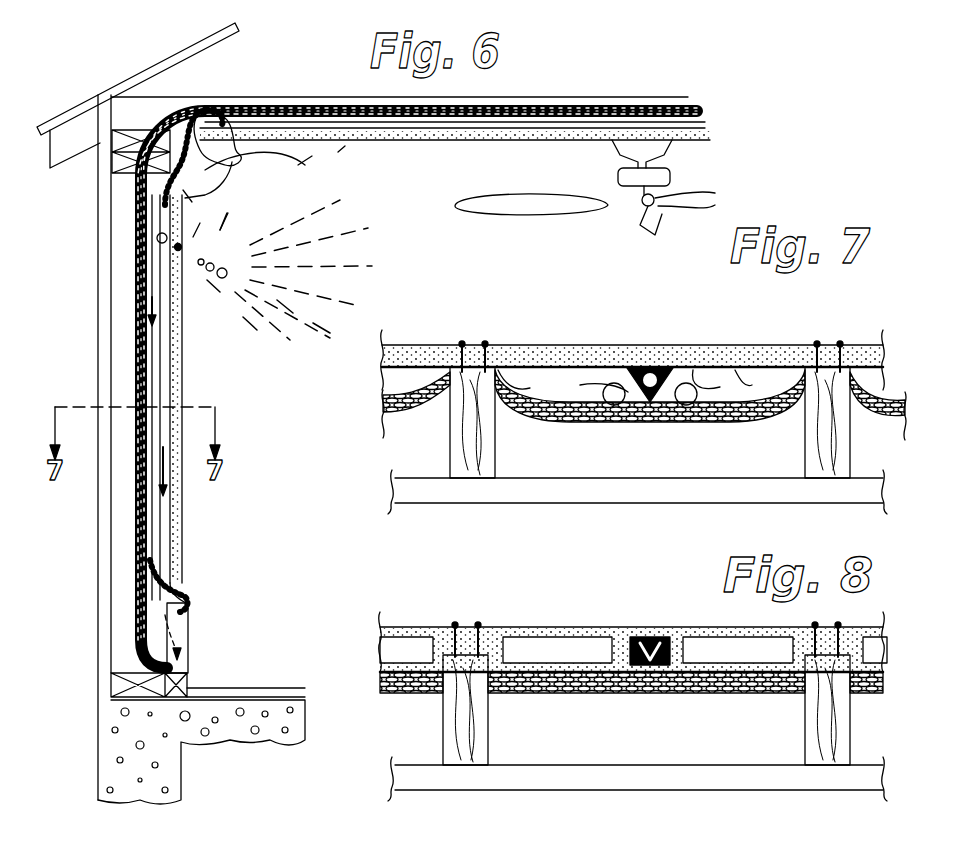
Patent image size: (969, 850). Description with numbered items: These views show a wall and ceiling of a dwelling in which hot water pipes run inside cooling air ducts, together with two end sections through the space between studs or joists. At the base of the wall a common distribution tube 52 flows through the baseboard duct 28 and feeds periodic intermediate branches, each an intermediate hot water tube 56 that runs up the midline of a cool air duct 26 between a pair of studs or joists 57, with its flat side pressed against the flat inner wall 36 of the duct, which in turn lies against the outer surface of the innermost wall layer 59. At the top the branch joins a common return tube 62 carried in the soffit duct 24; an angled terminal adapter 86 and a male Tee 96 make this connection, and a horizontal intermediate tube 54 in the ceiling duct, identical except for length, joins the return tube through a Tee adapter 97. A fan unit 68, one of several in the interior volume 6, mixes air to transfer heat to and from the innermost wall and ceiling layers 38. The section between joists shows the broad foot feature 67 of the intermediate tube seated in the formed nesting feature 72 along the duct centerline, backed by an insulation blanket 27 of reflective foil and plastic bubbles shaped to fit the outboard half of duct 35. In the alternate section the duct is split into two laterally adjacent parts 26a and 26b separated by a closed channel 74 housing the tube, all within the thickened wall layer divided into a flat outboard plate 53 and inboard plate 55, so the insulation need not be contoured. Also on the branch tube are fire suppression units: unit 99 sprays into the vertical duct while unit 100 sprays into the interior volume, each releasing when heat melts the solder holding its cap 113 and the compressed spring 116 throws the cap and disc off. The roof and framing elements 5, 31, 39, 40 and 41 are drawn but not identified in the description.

In FIG. 6, the roof 5 is at (165, 55).
In FIG. 6, the interior volume 6 is at (283, 562).
In FIG. 7, the interior volume 6 is at (448, 282).
In FIG. 6, the soffit duct 24 is at (305, 166).
In FIG. 6, the cool air duct 26 is at (157, 360).
In FIG. 7, the cool air duct 26 is at (527, 383).
In FIG. 8, the first laterally adjacent duct part 26a is at (550, 648).
In FIG. 8, the second laterally adjacent duct part 26b is at (690, 680).
In FIG. 6, the insulation blanket 27 is at (300, 106).
In FIG. 7, the insulation blanket 27 is at (540, 424).
In FIG. 8, the insulation blanket 27 is at (558, 696).
In FIG. 6, the baseboard duct 28 is at (188, 630).
In FIG. 6, the wall stud / framing 31 is at (108, 380).
In FIG. 7, the wall stud / framing 31 is at (520, 503).
In FIG. 8, the wall stud / framing 31 is at (657, 793).
In FIG. 7, the outboard half of duct 35 is at (738, 422).
In FIG. 7, the flat inner wall of duct 36 is at (694, 378).
In FIG. 6, the innermost wall layer 38 is at (388, 140).
In FIG. 7, the innermost wall layer 38 is at (597, 350).
In FIG. 8, the innermost wall layer 38 is at (498, 627).
In FIG. 7, the fasteners 39 is at (498, 345).
In FIG. 8, the fasteners 39 is at (455, 630).
In FIG. 6, the nozzle head 40 is at (192, 145).
In FIG. 6, the bottom plate 41 is at (183, 688).
In FIG. 6, the common distribution tube 52 is at (190, 598).
In FIG. 8, the outboard plate 53 is at (527, 662).
In FIG. 6, the horizontal intermediate tube 54 is at (555, 118).
In FIG. 8, the inboard plate 55 is at (603, 647).
In FIG. 6, the intermediate hot water tube 56 is at (166, 382).
In FIG. 7, the intermediate hot water tube 56 is at (600, 383).
In FIG. 8, the intermediate hot water tube 56 is at (652, 725).
In FIG. 7, the studs or joists 57 is at (500, 445).
In FIG. 8, the studs or joists 57 is at (488, 744).
In FIG. 7, the innermost wall layer 59 is at (775, 345).
In FIG. 6, the common return tube 62 is at (227, 181).
In FIG. 7, the broad foot feature 67 is at (622, 338).
In FIG. 8, the broad foot feature 67 is at (622, 620).
In FIG. 6, the fan unit 68 is at (620, 178).
In FIG. 7, the formed nesting feature 72 is at (615, 405).
In FIG. 8, the closed channel 74 is at (600, 690).
In FIG. 6, the angled terminal adapter 86 is at (150, 226).
In FIG. 6, the male Tee 96 is at (205, 190).
In FIG. 6, the Tee adapter 97 is at (187, 165).
In FIG. 6, the fire suppression unit 99 is at (156, 238).
In FIG. 6, the fire suppression unit 100 is at (176, 248).
In FIG. 6, the cap 113 is at (285, 270).
In FIG. 6, the compressed spring 116 is at (287, 273).